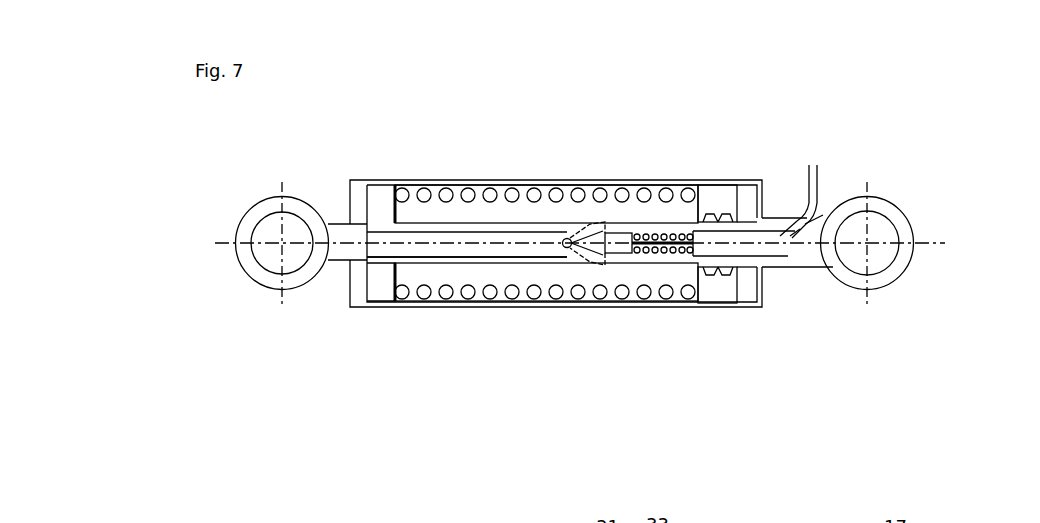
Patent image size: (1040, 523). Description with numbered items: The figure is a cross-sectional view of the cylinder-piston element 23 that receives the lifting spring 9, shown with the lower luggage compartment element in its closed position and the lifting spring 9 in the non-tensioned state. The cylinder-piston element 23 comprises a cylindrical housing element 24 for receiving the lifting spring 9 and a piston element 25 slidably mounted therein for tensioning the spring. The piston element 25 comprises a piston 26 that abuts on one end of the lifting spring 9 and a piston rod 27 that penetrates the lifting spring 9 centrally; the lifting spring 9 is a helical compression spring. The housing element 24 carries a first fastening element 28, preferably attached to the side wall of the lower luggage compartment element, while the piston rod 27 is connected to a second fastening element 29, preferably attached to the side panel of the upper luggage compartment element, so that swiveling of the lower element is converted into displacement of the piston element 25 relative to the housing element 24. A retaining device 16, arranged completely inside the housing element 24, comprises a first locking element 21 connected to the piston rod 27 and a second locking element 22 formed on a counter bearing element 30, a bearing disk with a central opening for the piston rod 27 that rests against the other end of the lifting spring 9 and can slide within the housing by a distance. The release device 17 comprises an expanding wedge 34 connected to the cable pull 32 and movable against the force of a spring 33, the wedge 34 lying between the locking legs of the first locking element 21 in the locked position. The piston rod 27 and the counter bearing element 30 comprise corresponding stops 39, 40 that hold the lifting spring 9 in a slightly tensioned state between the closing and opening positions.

The lifting spring 9 is at (423, 194).
The retaining device 16 is at (608, 270).
The release device 17 is at (826, 178).
The first locking element 21 is at (586, 270).
The second locking element 22 is at (716, 276).
The cylinder-piston element 23 is at (756, 336).
The housing element 24 is at (427, 305).
The piston element 25 is at (469, 238).
The piston 26 is at (388, 275).
The piston rod 27 is at (427, 244).
The first fastening element 28 is at (264, 232).
The second fastening element 29 is at (890, 256).
The counter bearing element 30 is at (718, 194).
The cable pull 32 is at (803, 228).
The spring 33 is at (677, 236).
The expanding wedge 34 is at (619, 238).
The stop 39 is at (738, 223).
The stop 40 is at (740, 270).